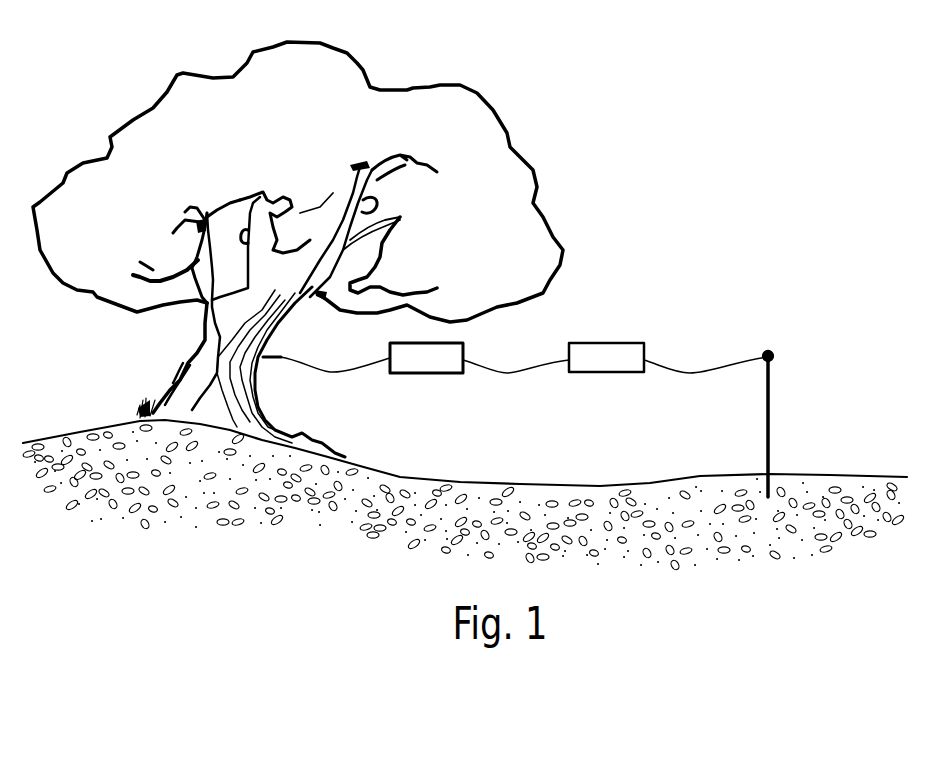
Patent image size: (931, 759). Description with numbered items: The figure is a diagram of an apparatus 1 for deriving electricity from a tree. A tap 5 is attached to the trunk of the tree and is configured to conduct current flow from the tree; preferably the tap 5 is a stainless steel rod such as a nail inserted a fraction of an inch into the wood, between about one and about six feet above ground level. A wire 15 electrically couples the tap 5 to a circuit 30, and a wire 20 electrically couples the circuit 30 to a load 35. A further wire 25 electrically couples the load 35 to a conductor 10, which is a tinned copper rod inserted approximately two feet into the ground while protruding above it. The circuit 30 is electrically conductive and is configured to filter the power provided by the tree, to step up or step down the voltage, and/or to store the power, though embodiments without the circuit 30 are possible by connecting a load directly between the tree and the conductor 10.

The apparatus 1 is at (464, 306).
The tap 5 is at (277, 353).
The conductor 10 is at (770, 383).
The wire 15 is at (327, 370).
The wire 20 is at (507, 373).
The wire 25 is at (683, 372).
The circuit 30 is at (433, 373).
The load 35 is at (593, 373).